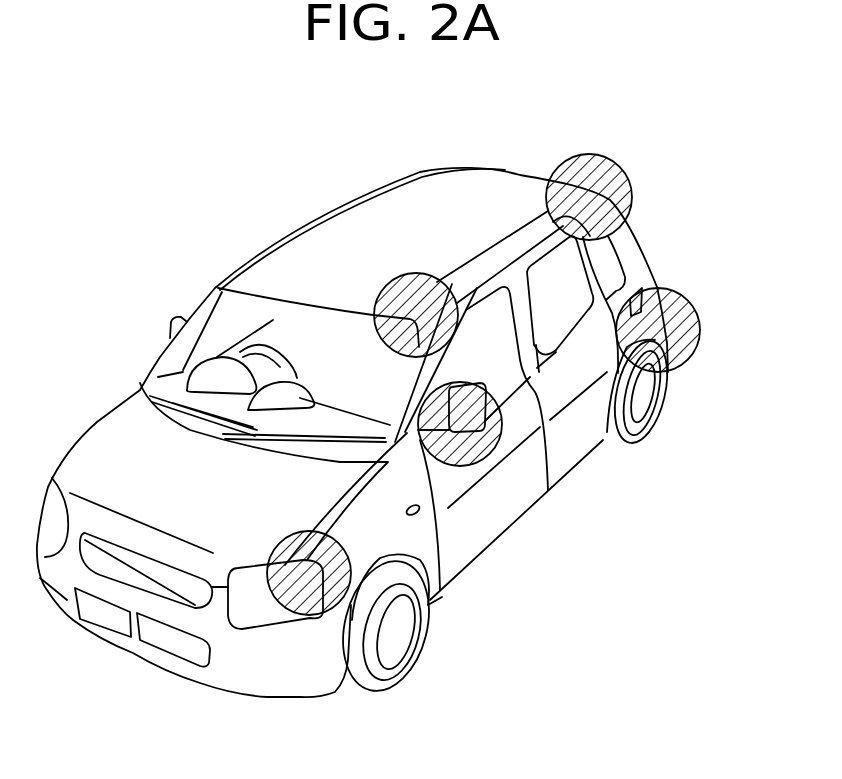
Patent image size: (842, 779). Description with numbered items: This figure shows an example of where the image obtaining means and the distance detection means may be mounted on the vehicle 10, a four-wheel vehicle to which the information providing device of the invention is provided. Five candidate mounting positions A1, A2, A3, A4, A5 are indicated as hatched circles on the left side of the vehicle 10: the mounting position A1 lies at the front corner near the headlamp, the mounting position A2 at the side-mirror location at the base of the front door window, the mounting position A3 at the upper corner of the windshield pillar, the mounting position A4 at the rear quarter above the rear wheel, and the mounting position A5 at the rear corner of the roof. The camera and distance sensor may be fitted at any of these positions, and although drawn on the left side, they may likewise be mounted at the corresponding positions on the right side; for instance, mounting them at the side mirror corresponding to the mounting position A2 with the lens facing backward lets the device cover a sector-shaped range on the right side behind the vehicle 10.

The vehicle 10 is at (277, 267).
The mounting position A1 is at (307, 590).
The mounting position A2 is at (482, 447).
The mounting position A3 is at (409, 290).
The mounting position A4 is at (687, 353).
The mounting position A5 is at (598, 170).